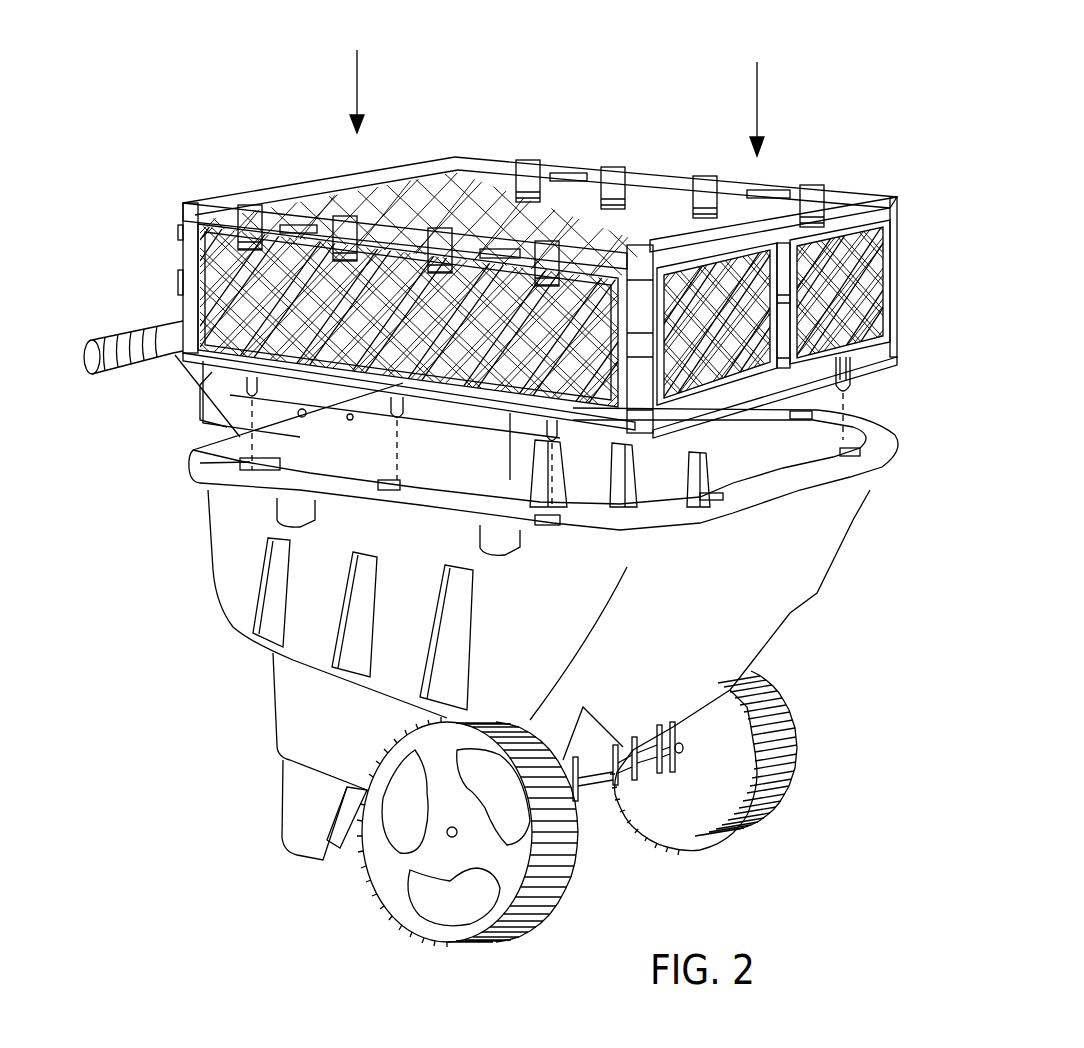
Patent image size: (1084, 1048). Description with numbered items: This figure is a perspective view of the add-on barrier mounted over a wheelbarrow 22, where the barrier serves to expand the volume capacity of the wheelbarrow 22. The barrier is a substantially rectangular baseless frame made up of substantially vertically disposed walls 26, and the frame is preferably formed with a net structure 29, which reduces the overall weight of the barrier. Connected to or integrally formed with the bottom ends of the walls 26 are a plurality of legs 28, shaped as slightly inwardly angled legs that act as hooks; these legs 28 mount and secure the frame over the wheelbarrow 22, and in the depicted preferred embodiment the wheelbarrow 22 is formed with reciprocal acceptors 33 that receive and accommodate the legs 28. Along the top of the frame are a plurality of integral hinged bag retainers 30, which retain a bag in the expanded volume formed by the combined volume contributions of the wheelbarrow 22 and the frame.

The wheelbarrow 22 is at (750, 627).
The walls 26 is at (897, 213).
The legs 28 is at (855, 378).
The net structure 29 is at (840, 293).
The hinged bag retainers 30 is at (337, 212).
The reciprocal acceptors 33 is at (250, 462).